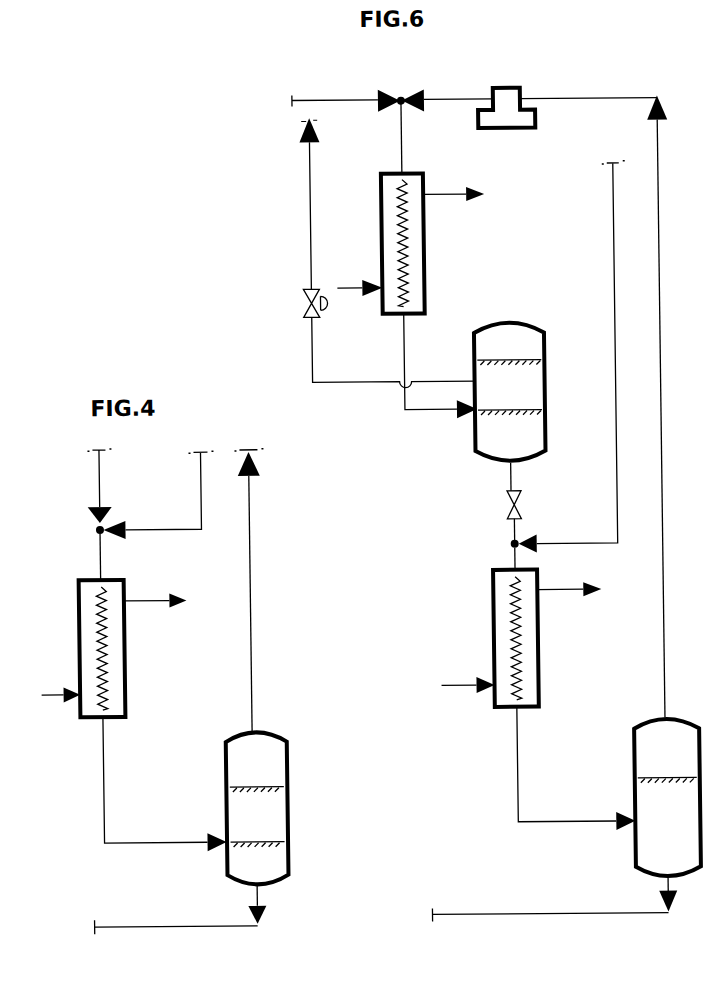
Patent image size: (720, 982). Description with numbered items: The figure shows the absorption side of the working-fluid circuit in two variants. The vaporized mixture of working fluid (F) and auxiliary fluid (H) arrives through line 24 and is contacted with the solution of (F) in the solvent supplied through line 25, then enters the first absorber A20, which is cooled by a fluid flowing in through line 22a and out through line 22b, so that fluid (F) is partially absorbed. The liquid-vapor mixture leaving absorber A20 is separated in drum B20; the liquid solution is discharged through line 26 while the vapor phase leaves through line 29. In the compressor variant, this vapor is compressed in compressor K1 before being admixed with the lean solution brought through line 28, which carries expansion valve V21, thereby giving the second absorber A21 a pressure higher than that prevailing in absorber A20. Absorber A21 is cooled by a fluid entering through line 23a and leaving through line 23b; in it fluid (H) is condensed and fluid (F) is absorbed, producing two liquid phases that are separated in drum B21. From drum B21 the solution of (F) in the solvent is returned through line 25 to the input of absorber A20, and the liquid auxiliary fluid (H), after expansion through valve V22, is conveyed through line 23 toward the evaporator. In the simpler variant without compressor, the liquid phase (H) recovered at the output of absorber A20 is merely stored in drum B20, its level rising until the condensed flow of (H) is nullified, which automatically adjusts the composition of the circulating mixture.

In FIG. 6, the cooling fluid line 22a is at (450, 688).
In FIG. 4, the cooling fluid line 22a is at (45, 695).
In FIG. 6, the cooling fluid line 22b is at (595, 593).
In FIG. 4, the cooling fluid line 22b is at (173, 597).
In FIG. 6, the auxiliary fluid line 23 is at (320, 161).
In FIG. 6, the cooling fluid line 23a is at (353, 290).
In FIG. 6, the cooling fluid line 23b is at (481, 191).
In FIG. 6, the vapor discharge line 24 is at (617, 234).
In FIG. 4, the vapor discharge line 24 is at (200, 479).
In FIG. 6, the solution line 25 is at (523, 529).
In FIG. 4, the solution line 25 is at (95, 484).
In FIG. 6, the liquid discharge line 26 is at (455, 916).
In FIG. 4, the liquid discharge line 26 is at (172, 924).
In FIG. 6, the lean solution line 28 is at (346, 100).
In FIG. 6, the vapor discharge line 29 is at (638, 99).
In FIG. 4, the vapor discharge line 29 is at (250, 487).
In FIG. 6, the compressor K1 is at (509, 89).
In FIG. 6, the expansion valve V21 is at (306, 314).
In FIG. 6, the expansion valve V22 is at (509, 499).
In FIG. 6, the absorber A20 is at (536, 656).
In FIG. 4, the absorber A20 is at (122, 660).
In FIG. 6, the second absorber A21 is at (427, 255).
In FIG. 6, the drum B20 is at (634, 730).
In FIG. 4, the drum B20 is at (222, 736).
In FIG. 6, the drum B21 is at (542, 327).